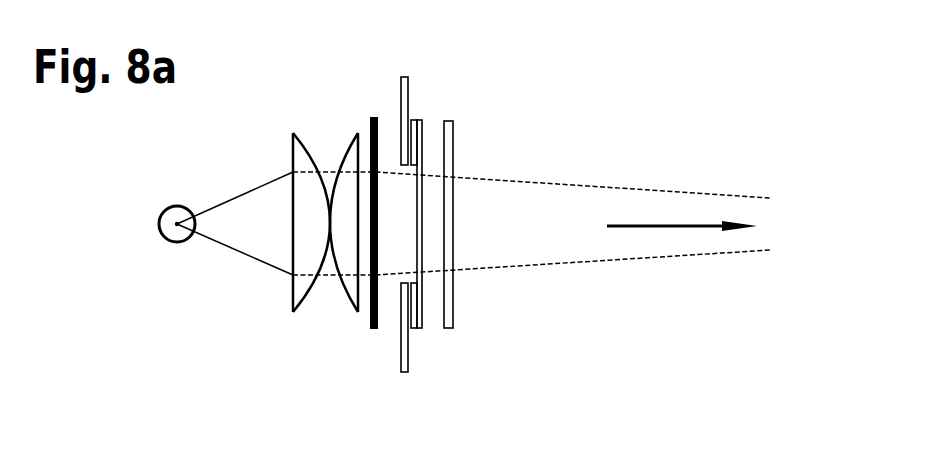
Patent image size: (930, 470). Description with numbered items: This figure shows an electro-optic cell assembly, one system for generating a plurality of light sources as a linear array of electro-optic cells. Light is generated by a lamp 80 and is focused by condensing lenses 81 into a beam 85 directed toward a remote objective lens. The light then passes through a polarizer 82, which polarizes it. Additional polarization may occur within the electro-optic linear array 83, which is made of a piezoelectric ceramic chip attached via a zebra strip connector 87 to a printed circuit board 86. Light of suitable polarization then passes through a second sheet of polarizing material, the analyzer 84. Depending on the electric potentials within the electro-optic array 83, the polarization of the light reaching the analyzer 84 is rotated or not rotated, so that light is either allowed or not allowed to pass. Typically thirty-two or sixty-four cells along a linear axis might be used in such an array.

The lamp 80 is at (177, 243).
The condensing lenses 81 is at (358, 312).
The polarizer 82 is at (374, 117).
The electro-optic linear array 83 is at (420, 328).
The analyzer 84 is at (447, 121).
The beam 85 is at (685, 225).
The printed circuit board 86 is at (404, 77).
The zebra strip connector 87 is at (415, 121).